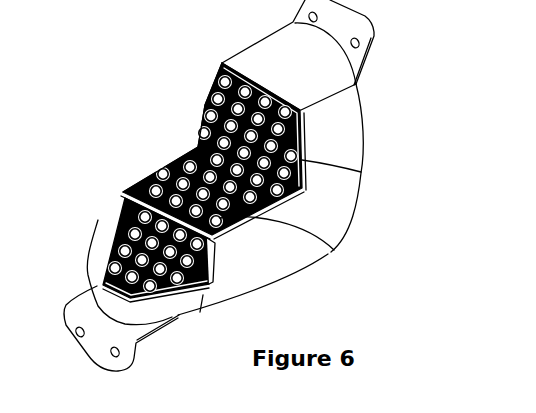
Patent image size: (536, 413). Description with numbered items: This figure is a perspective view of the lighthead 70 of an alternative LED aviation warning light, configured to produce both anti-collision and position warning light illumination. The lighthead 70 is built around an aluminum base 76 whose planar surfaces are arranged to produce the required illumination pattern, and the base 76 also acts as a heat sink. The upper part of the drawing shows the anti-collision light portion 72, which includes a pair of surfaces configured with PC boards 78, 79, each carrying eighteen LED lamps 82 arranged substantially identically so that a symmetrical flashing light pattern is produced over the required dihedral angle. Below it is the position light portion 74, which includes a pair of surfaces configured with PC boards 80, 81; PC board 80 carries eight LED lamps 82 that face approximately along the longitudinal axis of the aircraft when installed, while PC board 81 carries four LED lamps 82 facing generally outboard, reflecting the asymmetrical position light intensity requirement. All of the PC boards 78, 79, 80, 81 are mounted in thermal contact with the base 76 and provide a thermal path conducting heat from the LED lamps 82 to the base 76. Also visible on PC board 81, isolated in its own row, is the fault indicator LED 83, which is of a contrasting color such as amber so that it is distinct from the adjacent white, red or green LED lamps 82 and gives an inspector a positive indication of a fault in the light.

The lighthead 70 is at (340, 137).
The anti-collision light portion 72 is at (222, 64).
The position light portion 74 is at (123, 192).
The aluminum base 76 is at (306, 74).
The PC board 78 is at (362, 165).
The PC board 79 is at (330, 257).
The PC board 80 is at (209, 284).
The PC board 81 is at (163, 297).
The LED lamps 82 is at (222, 63).
The fault indicator LED 83 is at (103, 283).